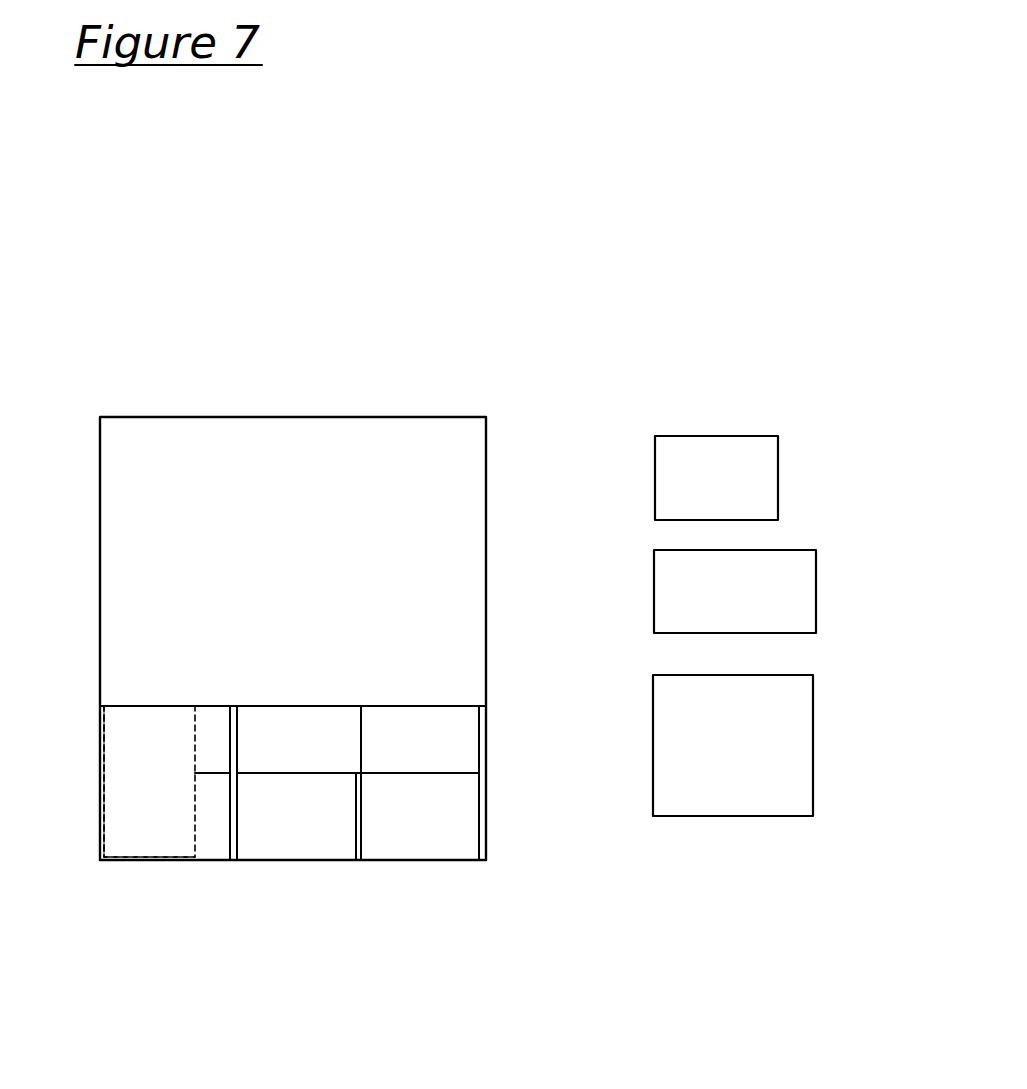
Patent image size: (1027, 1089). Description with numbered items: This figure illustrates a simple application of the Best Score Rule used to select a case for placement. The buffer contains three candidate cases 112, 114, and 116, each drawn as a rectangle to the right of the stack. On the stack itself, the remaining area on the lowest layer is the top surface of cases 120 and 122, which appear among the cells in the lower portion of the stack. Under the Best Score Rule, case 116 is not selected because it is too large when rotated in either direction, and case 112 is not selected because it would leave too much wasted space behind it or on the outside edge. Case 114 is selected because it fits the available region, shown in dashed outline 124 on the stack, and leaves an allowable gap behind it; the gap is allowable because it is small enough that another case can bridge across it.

The case 112 is at (765, 480).
The case 114 is at (803, 595).
The case 116 is at (798, 747).
The case 120 is at (208, 727).
The case 122 is at (217, 838).
The module bay outline 124 is at (100, 833).